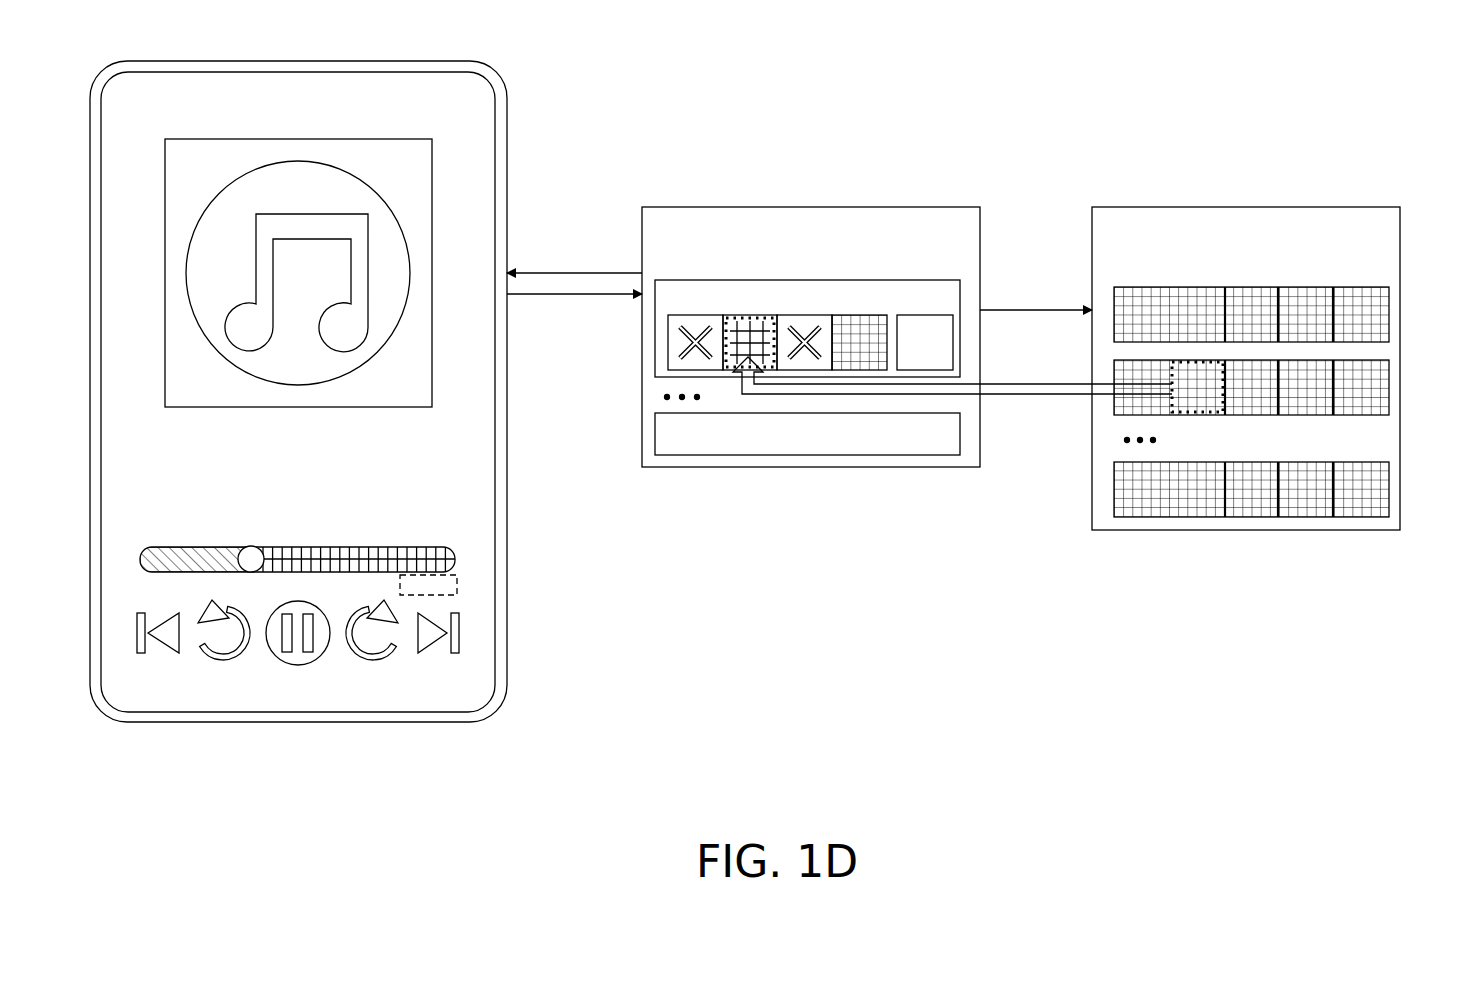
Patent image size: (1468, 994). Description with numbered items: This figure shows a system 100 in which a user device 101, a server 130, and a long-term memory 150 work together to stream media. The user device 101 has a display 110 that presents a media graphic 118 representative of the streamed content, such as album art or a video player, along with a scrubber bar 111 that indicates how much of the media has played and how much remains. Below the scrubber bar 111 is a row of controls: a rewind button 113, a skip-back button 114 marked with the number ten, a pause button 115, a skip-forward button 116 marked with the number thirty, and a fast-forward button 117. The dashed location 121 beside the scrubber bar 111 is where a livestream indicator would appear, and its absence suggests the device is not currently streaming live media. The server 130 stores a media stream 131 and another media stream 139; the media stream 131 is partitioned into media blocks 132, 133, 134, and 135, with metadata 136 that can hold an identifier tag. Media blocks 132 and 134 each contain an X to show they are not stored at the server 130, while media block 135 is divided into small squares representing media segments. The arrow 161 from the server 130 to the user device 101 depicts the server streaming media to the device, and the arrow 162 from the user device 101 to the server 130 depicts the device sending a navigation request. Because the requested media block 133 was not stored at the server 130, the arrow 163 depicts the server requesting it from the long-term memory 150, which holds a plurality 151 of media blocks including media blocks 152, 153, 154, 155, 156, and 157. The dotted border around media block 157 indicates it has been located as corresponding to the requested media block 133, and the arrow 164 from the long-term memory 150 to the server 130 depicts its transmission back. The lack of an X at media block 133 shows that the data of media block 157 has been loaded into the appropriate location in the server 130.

The system 100 is at (925, 35).
The user device 101 is at (433, 50).
The display 110 is at (235, 72).
The scrubber bar 111 is at (462, 565).
The rewind button 113 is at (163, 648).
The skip-back button 114 is at (223, 661).
The pause button 115 is at (283, 665).
The skip-forward button 116 is at (365, 661).
The fast-forward button 117 is at (435, 650).
The media graphic 118 is at (163, 175).
The location 121 is at (456, 597).
The server 130 is at (822, 185).
The media stream 131 is at (905, 297).
The media block 132 is at (668, 323).
The media block 133 is at (745, 360).
The media block 134 is at (818, 315).
The media block 135 is at (872, 315).
The metadata 136 is at (928, 315).
The media stream 139 is at (917, 438).
The long-term memory 150 is at (1200, 178).
The plurality of media blocks 151 is at (1396, 288).
The media block 152 is at (1123, 287).
The media block 153 is at (1198, 287).
The media block 154 is at (1308, 287).
The media block 155 is at (1352, 287).
The media block 156 is at (1137, 415).
The media block 157 is at (1215, 415).
The arrow 161 is at (528, 272).
The arrow 162 is at (597, 296).
The arrow 163 is at (1000, 308).
The arrow 164 is at (1077, 400).